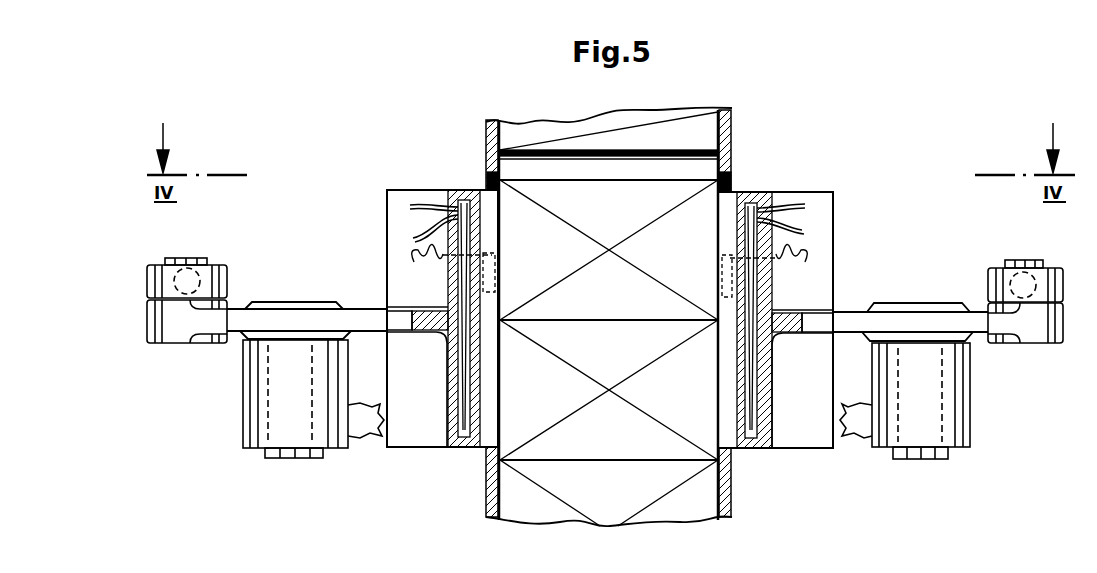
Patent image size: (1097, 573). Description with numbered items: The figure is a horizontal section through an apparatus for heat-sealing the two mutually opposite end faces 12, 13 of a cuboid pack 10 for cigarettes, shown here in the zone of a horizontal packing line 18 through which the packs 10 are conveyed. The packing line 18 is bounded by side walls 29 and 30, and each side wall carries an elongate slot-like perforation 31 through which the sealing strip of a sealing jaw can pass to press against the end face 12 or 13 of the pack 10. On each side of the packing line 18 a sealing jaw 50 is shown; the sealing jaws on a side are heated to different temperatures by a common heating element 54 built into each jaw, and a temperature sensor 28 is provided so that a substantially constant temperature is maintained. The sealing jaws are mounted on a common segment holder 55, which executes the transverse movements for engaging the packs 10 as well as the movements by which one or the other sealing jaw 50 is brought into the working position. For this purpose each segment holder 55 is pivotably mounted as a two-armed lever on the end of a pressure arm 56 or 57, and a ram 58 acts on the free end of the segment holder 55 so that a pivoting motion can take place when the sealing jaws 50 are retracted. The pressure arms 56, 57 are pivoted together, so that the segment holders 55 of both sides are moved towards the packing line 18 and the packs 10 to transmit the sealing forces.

The pack 10 is at (614, 219).
The end face 12 is at (503, 212).
The end face 13 is at (740, 171).
The packing line 18 is at (742, 152).
The temperature sensor 28 is at (492, 283).
The side wall 29 is at (486, 130).
The side wall 30 is at (733, 118).
The perforation 31 is at (490, 178).
The sealing jaw 50 is at (436, 460).
The heating element 54 is at (465, 236).
The segment holder 55 is at (235, 320).
The pressure arm 56 is at (856, 428).
The pressure arm 57 is at (353, 427).
The ram 58 is at (187, 277).